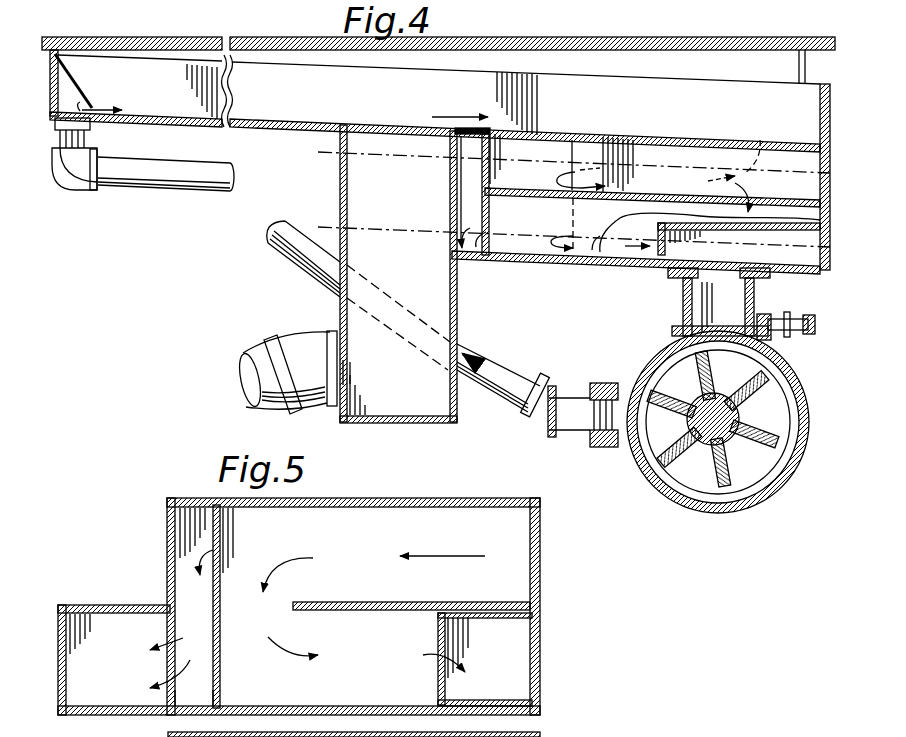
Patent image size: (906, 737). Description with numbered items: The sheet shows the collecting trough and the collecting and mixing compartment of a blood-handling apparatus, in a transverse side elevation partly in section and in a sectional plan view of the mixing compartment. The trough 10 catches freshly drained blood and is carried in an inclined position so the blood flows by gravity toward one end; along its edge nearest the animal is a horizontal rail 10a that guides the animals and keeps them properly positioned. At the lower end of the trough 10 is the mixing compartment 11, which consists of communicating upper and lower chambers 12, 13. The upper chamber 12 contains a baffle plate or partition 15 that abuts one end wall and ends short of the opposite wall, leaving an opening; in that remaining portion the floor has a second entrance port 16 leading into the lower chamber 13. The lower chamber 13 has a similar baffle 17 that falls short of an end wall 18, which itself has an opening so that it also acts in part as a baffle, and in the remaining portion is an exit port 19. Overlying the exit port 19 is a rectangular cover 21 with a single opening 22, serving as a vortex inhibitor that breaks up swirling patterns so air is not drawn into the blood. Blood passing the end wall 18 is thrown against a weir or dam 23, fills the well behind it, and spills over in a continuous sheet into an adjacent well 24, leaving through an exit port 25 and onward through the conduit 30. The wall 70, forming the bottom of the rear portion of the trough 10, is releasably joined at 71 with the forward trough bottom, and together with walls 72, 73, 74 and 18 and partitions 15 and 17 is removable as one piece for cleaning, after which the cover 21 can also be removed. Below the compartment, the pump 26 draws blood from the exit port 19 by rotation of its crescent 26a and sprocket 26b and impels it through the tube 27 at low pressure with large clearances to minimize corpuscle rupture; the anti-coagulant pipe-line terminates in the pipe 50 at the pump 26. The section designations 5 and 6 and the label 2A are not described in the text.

In FIG. 4, the trough 10 is at (168, 78).
In FIG. 4, the horizontal rail 10a is at (661, 38).
In FIG. 4, the mixing compartment 11 is at (628, 268).
In FIG. 5, the mixing compartment 11 is at (430, 498).
In FIG. 4, the upper chamber 12 is at (824, 190).
In FIG. 5, the upper chamber 12 is at (512, 582).
In FIG. 4, the lower chamber 13 is at (592, 258).
In FIG. 4, the baffle plate 15 is at (644, 165).
In FIG. 5, the baffle plate 15 is at (348, 605).
In FIG. 4, the second entrance port 16 is at (760, 203).
In FIG. 5, the second entrance port 16 is at (495, 641).
In FIG. 4, the baffle 17 is at (573, 256).
In FIG. 4, the end wall 18 is at (497, 256).
In FIG. 5, the end wall 18 is at (265, 637).
In FIG. 4, the exit port 19 is at (723, 266).
In FIG. 4, the cover 21 is at (668, 215).
In FIG. 4, the opening 22 is at (660, 246).
In FIG. 4, the weir 23 is at (449, 238).
In FIG. 5, the weir 23 is at (167, 700).
In FIG. 4, the well 24 is at (392, 400).
In FIG. 4, the exit port 25 is at (393, 372).
In FIG. 4, the pump 26 is at (688, 507).
In FIG. 4, the crescent 26a is at (755, 490).
In FIG. 4, the sprocket 26b is at (687, 382).
In FIG. 4, the tube 27 is at (186, 164).
In FIG. 4, the conduit 30 is at (255, 362).
In FIG. 4, the pipe 50 is at (790, 320).
In FIG. 4, the wall 70 is at (587, 128).
In FIG. 4, the releasable joint 71 is at (459, 160).
In FIG. 4, the wall 72 is at (815, 163).
In FIG. 5, the wall 72 is at (528, 530).
In FIG. 4, the wall 73 is at (505, 191).
In FIG. 4, the wall 74 is at (536, 247).
In FIG. 5, the side compartment wall 2A is at (110, 612).
In FIG. 4, the section line 5- 5 is at (331, 147).
In FIG. 4, the section line 6- 6 is at (331, 223).